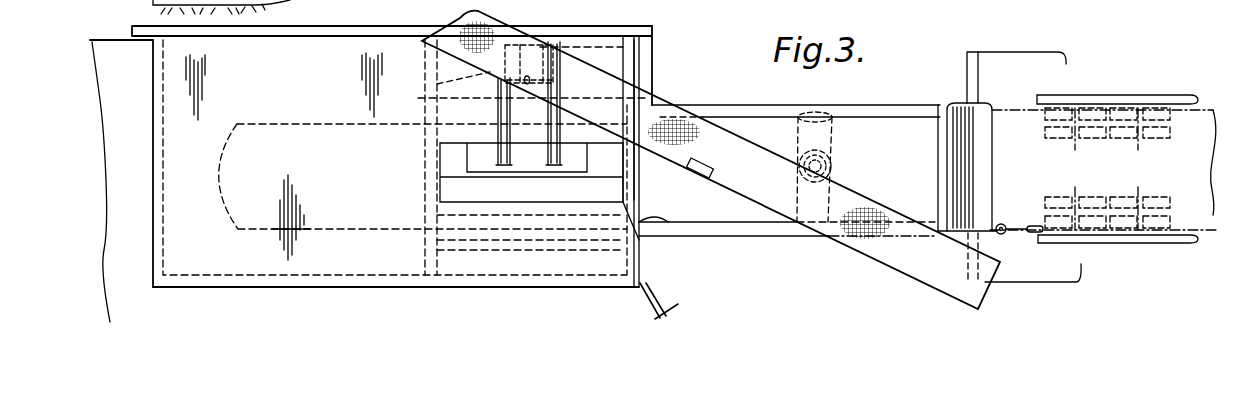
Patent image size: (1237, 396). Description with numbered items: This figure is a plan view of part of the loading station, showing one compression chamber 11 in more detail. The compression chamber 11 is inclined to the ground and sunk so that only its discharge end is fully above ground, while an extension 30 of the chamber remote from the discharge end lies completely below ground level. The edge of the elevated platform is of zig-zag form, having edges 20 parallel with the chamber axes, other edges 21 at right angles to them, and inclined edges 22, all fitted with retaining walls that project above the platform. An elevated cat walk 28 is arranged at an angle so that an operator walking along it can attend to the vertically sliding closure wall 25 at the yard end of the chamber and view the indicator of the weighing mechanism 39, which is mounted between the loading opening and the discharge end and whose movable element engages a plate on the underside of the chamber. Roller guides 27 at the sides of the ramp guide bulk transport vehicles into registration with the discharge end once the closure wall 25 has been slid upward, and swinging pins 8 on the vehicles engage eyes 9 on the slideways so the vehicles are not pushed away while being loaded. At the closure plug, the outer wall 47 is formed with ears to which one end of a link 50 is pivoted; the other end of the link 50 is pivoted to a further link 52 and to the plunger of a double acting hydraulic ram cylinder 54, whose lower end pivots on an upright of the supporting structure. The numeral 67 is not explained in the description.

The hopper 67 is at (268, 7).
The edges 20 is at (610, 27).
The other edges 21 is at (642, 75).
The elevated cat walk 28 is at (688, 112).
The weighing mechanism 39 is at (827, 121).
The compression chamber 11 is at (890, 127).
The vertically sliding closure wall 25 is at (967, 127).
The roller guides 27 is at (1155, 97).
The swinging pins 8 is at (1031, 226).
The eyes 9 is at (1005, 234).
The inclined edges 22 is at (661, 297).
The outer wall 47 is at (577, 160).
The extension 30 is at (323, 220).
The link 50 is at (508, 163).
The further link 52 is at (440, 63).
The double acting hydraulic ram cylinder 54 is at (437, 90).